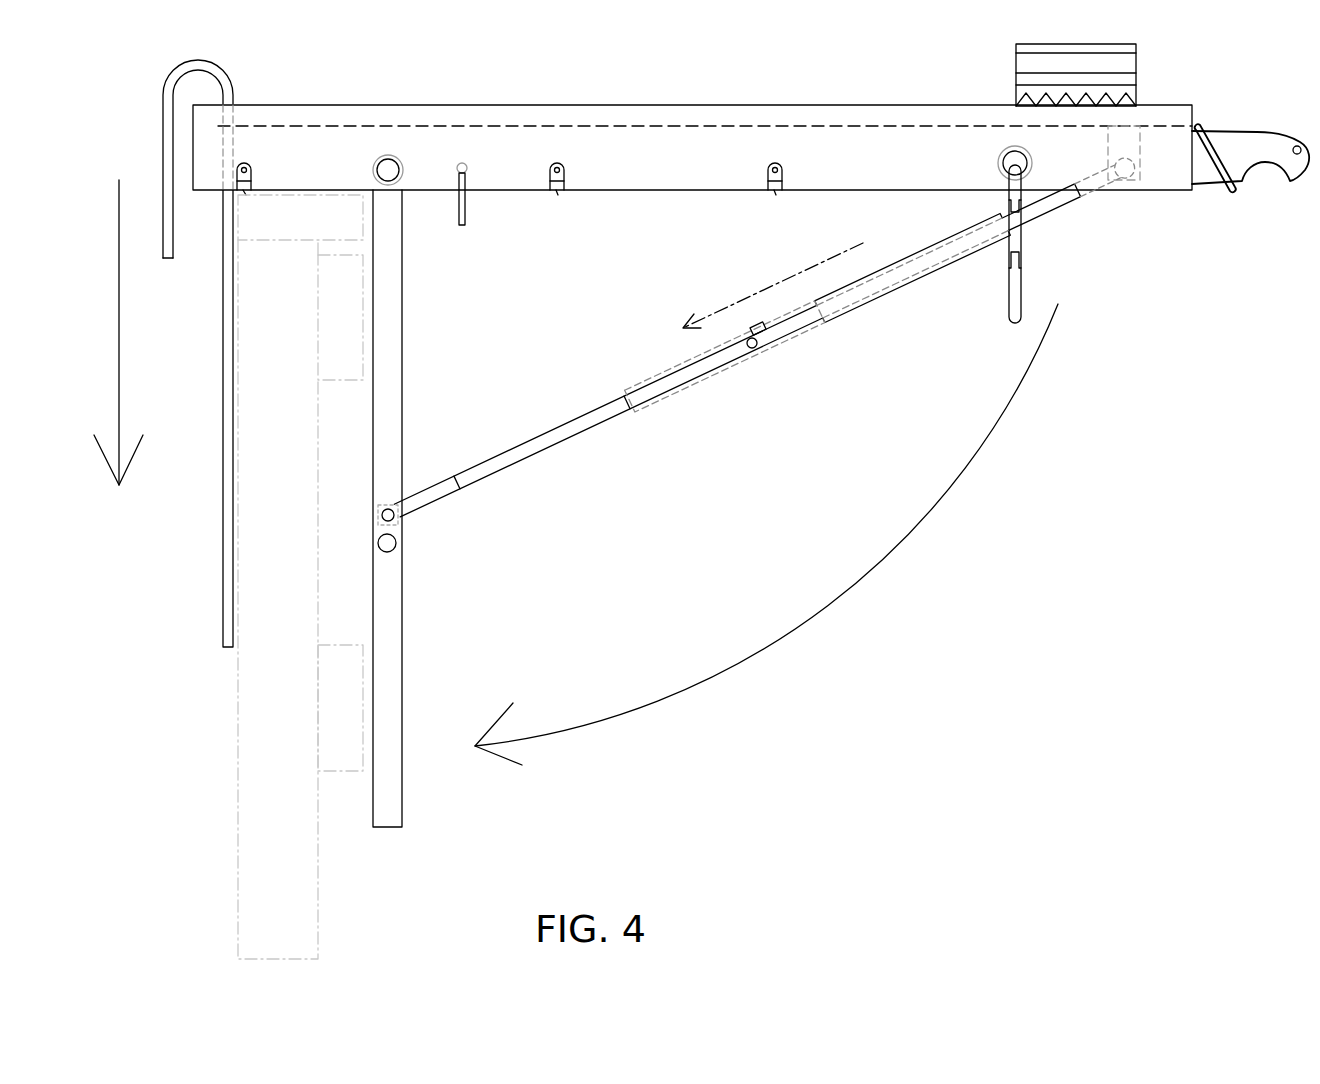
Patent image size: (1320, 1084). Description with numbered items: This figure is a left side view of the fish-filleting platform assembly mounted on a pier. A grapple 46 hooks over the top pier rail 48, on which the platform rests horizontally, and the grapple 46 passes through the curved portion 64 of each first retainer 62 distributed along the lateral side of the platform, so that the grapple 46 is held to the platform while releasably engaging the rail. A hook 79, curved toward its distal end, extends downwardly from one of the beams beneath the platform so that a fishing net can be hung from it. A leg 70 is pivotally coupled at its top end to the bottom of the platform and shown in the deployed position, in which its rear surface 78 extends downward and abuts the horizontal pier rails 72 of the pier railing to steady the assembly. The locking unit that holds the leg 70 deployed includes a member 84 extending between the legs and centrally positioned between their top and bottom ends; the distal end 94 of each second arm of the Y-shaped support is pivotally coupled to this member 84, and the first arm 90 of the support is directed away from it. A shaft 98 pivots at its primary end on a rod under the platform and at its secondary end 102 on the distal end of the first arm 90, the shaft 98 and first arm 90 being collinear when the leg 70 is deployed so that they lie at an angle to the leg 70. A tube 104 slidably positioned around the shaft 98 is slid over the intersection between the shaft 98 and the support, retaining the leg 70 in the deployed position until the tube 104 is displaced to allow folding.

The grapple 46 is at (228, 83).
The first retainer 62 is at (251, 167).
The top pier rail 48 is at (340, 190).
The curved portion 64 is at (245, 192).
The hook 79 is at (466, 222).
The leg 70 is at (402, 827).
The rear surface 78 is at (373, 795).
The horizontal pier rail 72 is at (363, 267).
The shaft 98 is at (1050, 213).
The tube 104 is at (920, 285).
The secondary end 102 is at (752, 349).
The first arm 90 is at (767, 338).
The distal end 94 is at (382, 508).
The member 84 is at (392, 550).